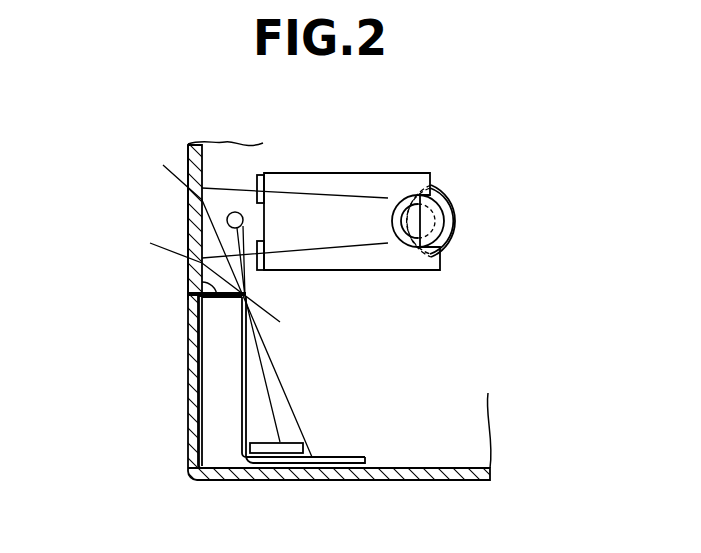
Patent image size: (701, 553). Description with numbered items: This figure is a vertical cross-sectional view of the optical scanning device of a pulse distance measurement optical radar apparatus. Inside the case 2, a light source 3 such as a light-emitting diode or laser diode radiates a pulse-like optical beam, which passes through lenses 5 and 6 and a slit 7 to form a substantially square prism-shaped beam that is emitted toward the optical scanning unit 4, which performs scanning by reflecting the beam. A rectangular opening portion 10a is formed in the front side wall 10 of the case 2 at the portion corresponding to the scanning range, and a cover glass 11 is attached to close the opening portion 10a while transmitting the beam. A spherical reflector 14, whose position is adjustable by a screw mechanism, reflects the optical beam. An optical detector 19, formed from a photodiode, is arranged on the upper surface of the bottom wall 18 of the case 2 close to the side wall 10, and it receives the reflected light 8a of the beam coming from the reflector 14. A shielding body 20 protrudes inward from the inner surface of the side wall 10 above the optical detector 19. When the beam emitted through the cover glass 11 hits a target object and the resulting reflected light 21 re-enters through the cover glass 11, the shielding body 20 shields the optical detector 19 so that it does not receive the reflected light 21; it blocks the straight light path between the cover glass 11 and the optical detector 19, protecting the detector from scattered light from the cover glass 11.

The case 2 is at (412, 481).
The light source 3 is at (455, 237).
The optical scanning unit 4 is at (450, 194).
The lens 5 is at (457, 215).
The lens 6 is at (464, 221).
The slit 7 is at (343, 172).
The reflected light 8a is at (275, 415).
The side wall 10 is at (187, 402).
The opening portion 10a is at (189, 290).
The cover glass 11 is at (188, 156).
The reflector 14 is at (235, 212).
The bottom wall 18 is at (282, 466).
The optical detector 19 is at (268, 450).
The shielding body 20 is at (196, 278).
The reflected light 21 is at (278, 373).